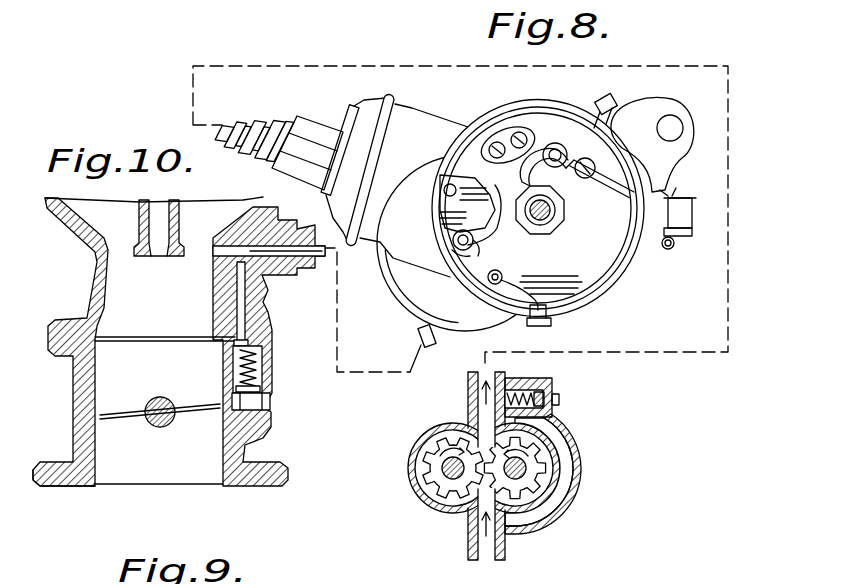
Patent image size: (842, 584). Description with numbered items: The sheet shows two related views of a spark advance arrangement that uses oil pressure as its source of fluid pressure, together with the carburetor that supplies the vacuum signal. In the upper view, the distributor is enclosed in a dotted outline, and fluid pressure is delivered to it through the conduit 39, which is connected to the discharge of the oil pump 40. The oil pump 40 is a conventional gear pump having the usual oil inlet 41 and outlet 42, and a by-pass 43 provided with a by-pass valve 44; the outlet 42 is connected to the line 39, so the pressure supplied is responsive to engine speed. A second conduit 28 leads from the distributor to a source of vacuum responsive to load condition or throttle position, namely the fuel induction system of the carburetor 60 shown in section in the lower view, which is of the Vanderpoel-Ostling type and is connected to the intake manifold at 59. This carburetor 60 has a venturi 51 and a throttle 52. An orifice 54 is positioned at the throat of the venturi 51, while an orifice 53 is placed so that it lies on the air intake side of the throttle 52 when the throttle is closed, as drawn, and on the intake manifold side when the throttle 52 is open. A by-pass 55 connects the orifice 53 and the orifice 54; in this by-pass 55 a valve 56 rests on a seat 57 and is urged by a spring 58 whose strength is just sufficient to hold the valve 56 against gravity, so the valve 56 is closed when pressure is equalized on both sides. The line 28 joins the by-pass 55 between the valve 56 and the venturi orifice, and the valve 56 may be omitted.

In FIG. 8, the conduit 28 is at (418, 331).
In FIG. 8, the conduit 39 is at (228, 128).
In FIG. 8, the oil pump 40 is at (412, 452).
In FIG. 8, the oil inlet 41 is at (475, 558).
In FIG. 8, the outlet 42 is at (490, 370).
In FIG. 8, the by-pass 43 is at (578, 480).
In FIG. 8, the by-pass valve 44 is at (548, 414).
In FIG. 10, the venturi 51 is at (208, 274).
In FIG. 10, the throttle 52 is at (202, 404).
In FIG. 10, the orifice 53 is at (228, 410).
In FIG. 10, the orifice 54 is at (207, 247).
In FIG. 10, the by-pass 55 is at (245, 306).
In FIG. 10, the valve 56 is at (265, 355).
In FIG. 10, the seat 57 is at (255, 342).
In FIG. 10, the spring 58 is at (262, 373).
In FIG. 10, the intake manifold connection 59 is at (52, 486).
In FIG. 10, the carburetor 60 is at (82, 393).